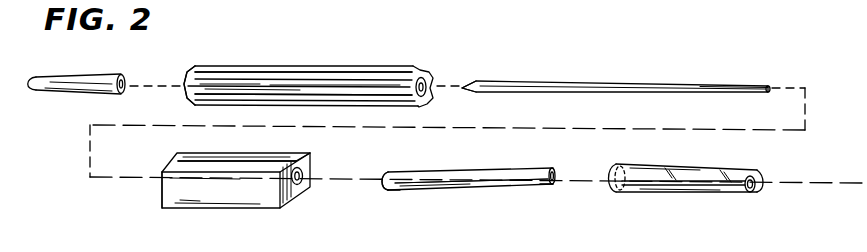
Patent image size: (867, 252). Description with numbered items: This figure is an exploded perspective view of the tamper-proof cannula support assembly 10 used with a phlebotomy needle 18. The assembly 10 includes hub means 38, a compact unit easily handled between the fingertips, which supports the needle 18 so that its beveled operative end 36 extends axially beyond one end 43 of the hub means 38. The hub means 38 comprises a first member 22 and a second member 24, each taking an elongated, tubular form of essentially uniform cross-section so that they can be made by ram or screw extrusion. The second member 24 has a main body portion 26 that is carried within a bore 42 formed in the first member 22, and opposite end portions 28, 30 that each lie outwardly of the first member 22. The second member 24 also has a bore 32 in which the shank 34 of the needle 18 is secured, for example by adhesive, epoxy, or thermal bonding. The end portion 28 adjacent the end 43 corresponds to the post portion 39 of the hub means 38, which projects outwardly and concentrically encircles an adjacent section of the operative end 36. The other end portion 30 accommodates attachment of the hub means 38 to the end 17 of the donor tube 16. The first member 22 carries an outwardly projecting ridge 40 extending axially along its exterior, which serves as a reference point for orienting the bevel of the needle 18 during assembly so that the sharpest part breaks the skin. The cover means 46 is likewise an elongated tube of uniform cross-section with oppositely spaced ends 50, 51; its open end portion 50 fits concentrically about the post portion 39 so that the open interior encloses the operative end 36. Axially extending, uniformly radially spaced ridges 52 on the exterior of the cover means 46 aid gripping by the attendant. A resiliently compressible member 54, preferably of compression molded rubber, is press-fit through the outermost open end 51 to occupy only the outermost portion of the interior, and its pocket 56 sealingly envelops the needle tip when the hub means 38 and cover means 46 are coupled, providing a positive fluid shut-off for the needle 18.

The assembly 10 is at (504, 49).
The donor tube 16 is at (718, 190).
The end of the donor tube 17 is at (621, 192).
The phlebotomy needle 18 is at (608, 84).
The first member 22 is at (240, 196).
The second member 24 is at (455, 171).
The main body portion 26 is at (502, 186).
The end portion 28 is at (390, 171).
The end portion 30 is at (540, 173).
The bore 32 is at (553, 186).
The shank 34 is at (690, 85).
The operative end 36 is at (500, 85).
The hub means 38 is at (383, 195).
The post portion 39 is at (391, 189).
The ridge 40 is at (215, 158).
The bore 42 is at (296, 184).
The end of the hub means 43 is at (162, 192).
The cover means 46 is at (370, 52).
The open end portion 50 is at (425, 82).
The open end 51 is at (186, 79).
The ridges 52 is at (292, 100).
The member 54 is at (78, 79).
The pocket 56 is at (123, 76).